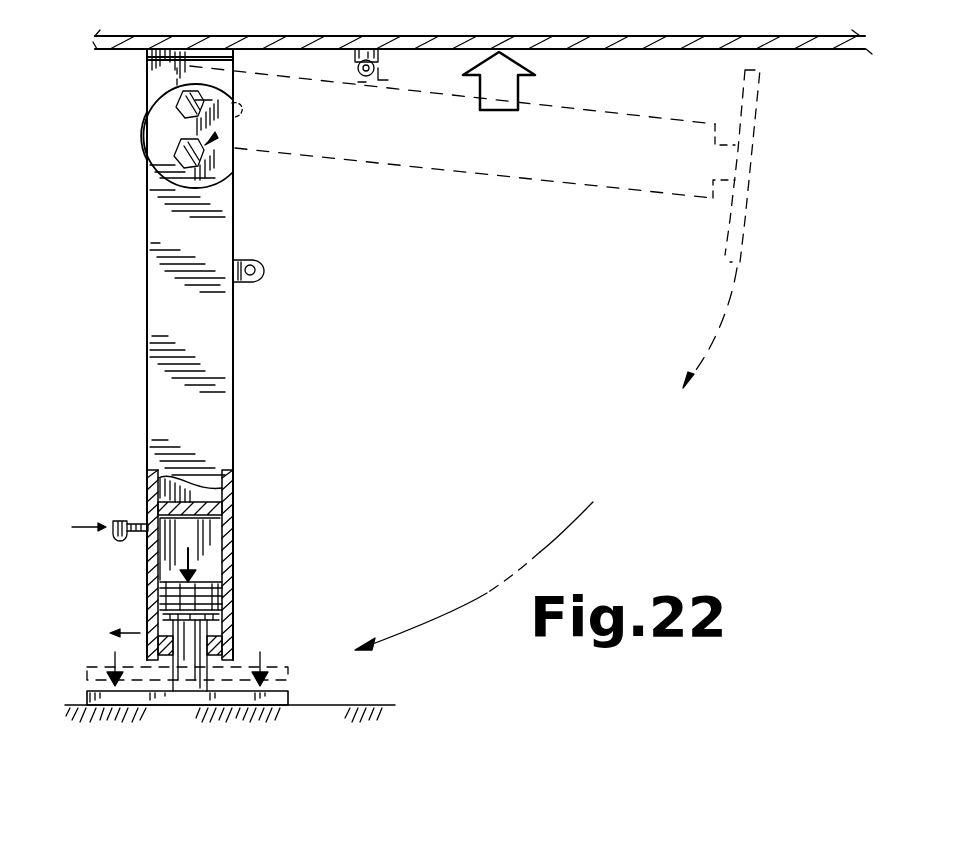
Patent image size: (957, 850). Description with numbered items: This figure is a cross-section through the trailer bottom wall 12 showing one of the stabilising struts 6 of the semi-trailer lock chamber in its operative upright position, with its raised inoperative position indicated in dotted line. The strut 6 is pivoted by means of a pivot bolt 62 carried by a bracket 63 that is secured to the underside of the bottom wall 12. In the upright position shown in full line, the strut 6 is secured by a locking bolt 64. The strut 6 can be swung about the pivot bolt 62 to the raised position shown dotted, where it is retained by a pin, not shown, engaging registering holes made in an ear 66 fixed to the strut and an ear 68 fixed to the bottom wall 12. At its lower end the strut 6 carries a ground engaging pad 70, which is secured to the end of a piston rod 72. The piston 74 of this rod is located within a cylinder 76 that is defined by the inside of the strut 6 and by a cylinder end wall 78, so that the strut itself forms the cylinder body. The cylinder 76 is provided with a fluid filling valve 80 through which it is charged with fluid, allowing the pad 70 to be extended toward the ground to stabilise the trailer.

The stabilising strut 6 is at (213, 346).
The bottom wall 12 is at (628, 44).
The pivot bolt 62 is at (182, 103).
The bracket 63 is at (233, 160).
The locking bolt 64 is at (172, 152).
The ear 66 is at (263, 268).
The ear 68 is at (384, 54).
The ground engaging pad 70 is at (245, 704).
The piston rod 72 is at (228, 628).
The piston 74 is at (208, 580).
The cylinder 76 is at (222, 538).
The cylinder end wall 78 is at (200, 486).
The fluid filling valve 80 is at (122, 518).